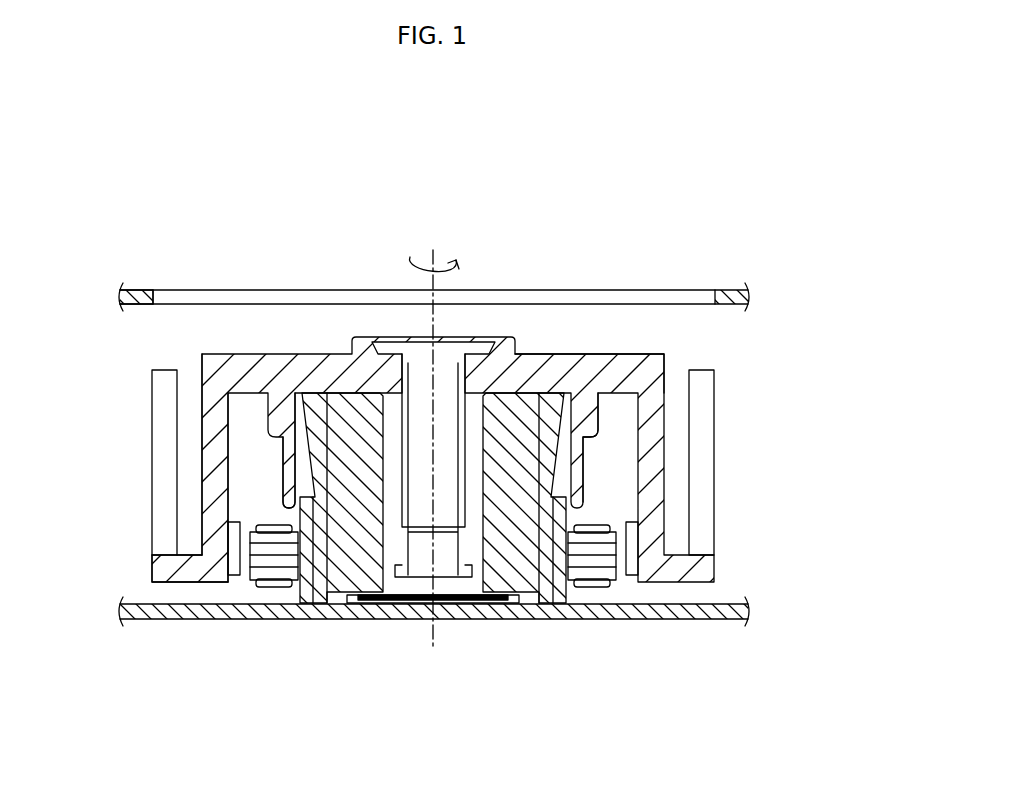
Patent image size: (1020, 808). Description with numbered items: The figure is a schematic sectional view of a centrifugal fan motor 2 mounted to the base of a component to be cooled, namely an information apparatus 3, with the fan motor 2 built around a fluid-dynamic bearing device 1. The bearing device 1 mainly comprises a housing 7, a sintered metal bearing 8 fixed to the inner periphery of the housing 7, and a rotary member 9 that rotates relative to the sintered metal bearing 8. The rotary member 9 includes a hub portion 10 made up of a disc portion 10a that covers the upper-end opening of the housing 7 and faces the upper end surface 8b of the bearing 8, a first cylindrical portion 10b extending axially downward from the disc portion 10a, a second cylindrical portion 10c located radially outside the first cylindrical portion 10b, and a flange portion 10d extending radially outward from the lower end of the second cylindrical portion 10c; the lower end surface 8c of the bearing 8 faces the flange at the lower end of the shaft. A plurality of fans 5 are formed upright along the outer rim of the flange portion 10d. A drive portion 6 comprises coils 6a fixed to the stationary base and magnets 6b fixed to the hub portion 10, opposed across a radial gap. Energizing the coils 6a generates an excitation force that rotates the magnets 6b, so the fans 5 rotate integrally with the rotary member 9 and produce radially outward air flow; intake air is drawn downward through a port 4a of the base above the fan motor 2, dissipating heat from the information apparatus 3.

The fluid-dynamic bearing device 1 is at (413, 625).
The fan motor 2 is at (618, 327).
The information apparatus 3 is at (643, 208).
The port 4a is at (153, 297).
The fans 5 is at (160, 466).
The drive portion 6 is at (441, 618).
The coils 6a is at (591, 587).
The magnets 6b is at (631, 575).
The housing 7 is at (278, 500).
The sintered metal bearing 8 is at (514, 547).
The upper end surface 8b is at (348, 392).
The lower end surface 8c is at (343, 603).
The rotary member 9 is at (503, 335).
The hub portion 10 is at (266, 352).
The disc portion 10a is at (550, 366).
The first cylindrical portion 10b is at (594, 414).
The second cylindrical portion 10c is at (225, 492).
The flange portion 10d is at (170, 573).